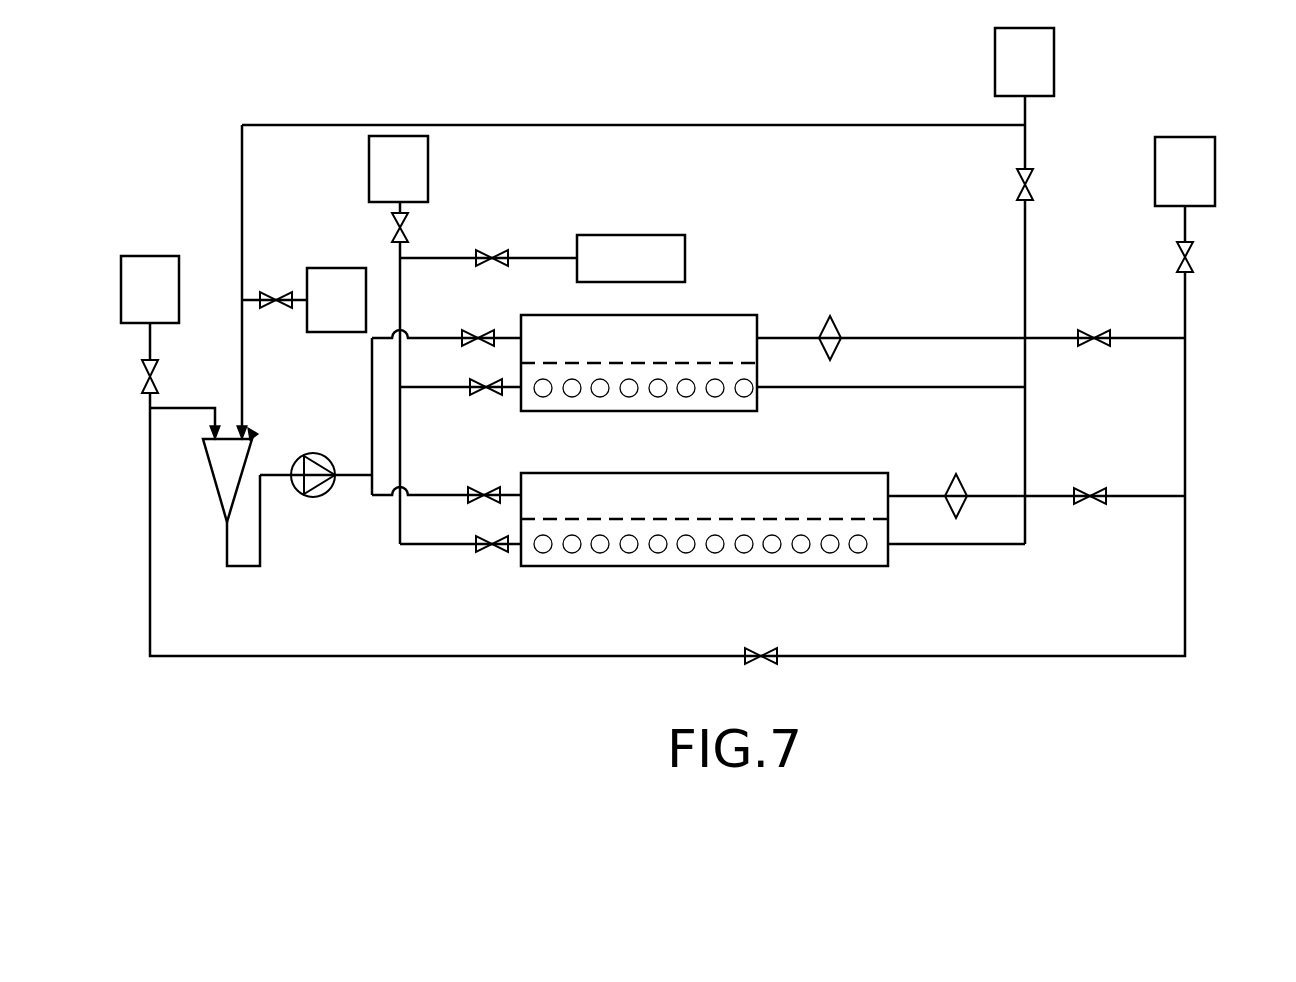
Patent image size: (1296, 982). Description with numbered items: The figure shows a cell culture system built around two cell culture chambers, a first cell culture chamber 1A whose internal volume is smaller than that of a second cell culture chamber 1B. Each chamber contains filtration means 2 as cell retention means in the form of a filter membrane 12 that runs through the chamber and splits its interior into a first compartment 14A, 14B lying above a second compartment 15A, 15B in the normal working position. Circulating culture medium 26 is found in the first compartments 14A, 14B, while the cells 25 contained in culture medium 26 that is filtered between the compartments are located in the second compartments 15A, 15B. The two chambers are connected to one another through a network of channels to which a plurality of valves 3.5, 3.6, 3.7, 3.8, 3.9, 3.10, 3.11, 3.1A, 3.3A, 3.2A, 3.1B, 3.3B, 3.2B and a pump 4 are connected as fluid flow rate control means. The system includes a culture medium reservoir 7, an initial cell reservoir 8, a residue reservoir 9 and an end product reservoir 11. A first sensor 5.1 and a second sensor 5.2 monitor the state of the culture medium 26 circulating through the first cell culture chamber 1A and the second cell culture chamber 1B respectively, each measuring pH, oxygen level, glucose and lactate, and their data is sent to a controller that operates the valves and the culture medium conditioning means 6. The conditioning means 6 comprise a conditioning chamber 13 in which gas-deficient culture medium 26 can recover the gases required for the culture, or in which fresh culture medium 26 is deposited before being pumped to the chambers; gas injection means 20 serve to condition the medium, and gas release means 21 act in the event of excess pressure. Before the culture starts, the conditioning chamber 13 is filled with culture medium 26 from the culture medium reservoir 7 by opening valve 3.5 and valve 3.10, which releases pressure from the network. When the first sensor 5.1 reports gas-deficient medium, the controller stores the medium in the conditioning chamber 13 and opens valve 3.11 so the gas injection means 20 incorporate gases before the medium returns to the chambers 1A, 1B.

The first cell culture chamber 1A is at (738, 305).
The second cell culture chamber 1B is at (822, 463).
The filtration means 2 is at (690, 350).
The valve 3.5 is at (150, 382).
The valve 3.6 is at (406, 232).
The valve 3.7 is at (778, 660).
The valve 3.8 is at (1192, 246).
The valve 3.9 is at (508, 263).
The valve 3.10 is at (264, 293).
The valve 3.11 is at (1018, 178).
The valve 3.1A is at (490, 331).
The valve 3.3A is at (496, 382).
The valve 3.2A is at (1112, 340).
The valve 3.1B is at (494, 488).
The valve 3.3B is at (502, 540).
The valve 3.2B is at (1108, 498).
The pump 4 is at (318, 490).
The first sensor 5.1 is at (836, 324).
The second sensor 5.2 is at (960, 484).
The culture medium conditioning means 6 is at (255, 430).
The culture medium reservoir 7 is at (150, 289).
The initial cell reservoir 8 is at (398, 169).
The residue reservoir 9 is at (1185, 171).
The end product reservoir 11 is at (631, 258).
The filter membrane 12 is at (657, 362).
The conditioning chamber 13 is at (227, 480).
The first compartment 14A is at (676, 326).
The first compartment 14B is at (702, 492).
The second compartment 15A is at (584, 400).
The second compartment 15B is at (563, 557).
The gas injection means 20 is at (1024, 62).
The gas release means 21 is at (336, 300).
The cells 25 is at (664, 398).
The culture medium 26 is at (752, 325).